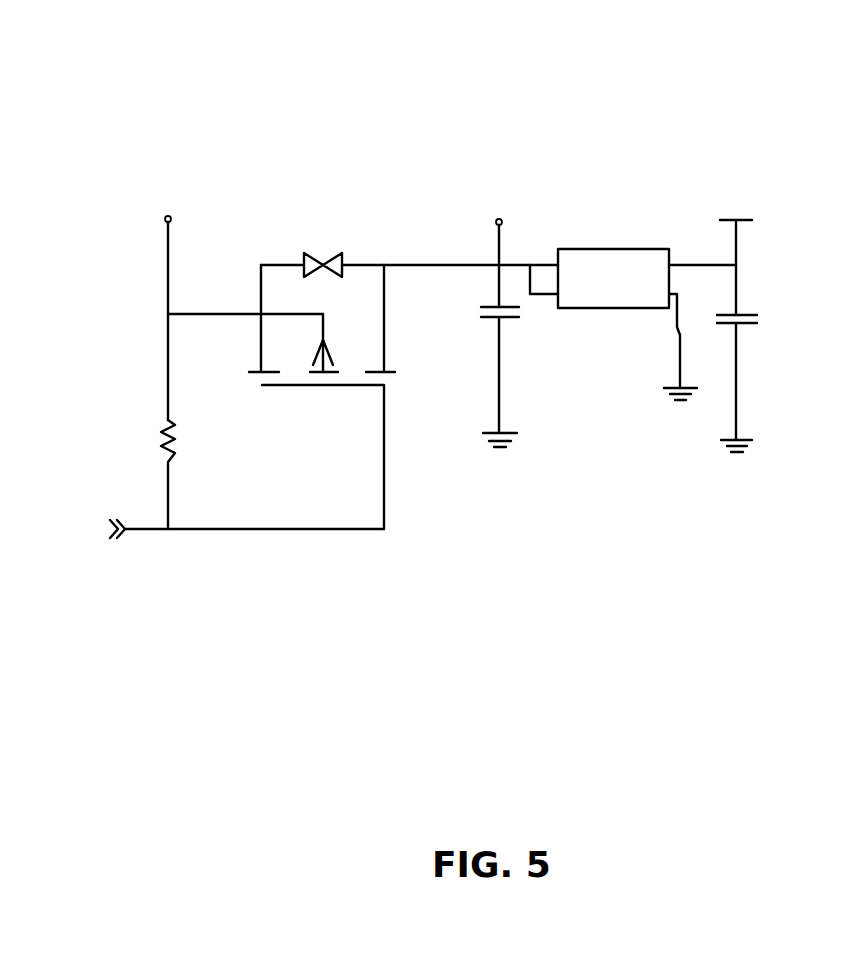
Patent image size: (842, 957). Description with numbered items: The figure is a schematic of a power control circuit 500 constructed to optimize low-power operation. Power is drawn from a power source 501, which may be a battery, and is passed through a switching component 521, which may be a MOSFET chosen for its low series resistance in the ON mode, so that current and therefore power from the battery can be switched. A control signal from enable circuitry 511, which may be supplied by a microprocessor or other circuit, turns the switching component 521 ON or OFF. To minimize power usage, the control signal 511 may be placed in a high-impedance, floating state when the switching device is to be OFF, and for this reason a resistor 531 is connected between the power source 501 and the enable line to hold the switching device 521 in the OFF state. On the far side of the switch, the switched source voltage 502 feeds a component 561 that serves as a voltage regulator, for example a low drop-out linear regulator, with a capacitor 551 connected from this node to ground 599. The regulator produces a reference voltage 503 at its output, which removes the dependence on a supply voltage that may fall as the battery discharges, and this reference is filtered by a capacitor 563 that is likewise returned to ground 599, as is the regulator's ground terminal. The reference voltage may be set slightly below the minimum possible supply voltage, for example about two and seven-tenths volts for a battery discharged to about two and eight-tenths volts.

The power control circuit 500 is at (558, 61).
The power source 501 is at (166, 217).
The source voltage 502 is at (497, 220).
The reference voltage 503 is at (733, 220).
The enable circuitry 511 is at (112, 527).
The switching component 521 is at (272, 385).
The resistor 531 is at (168, 432).
The capacitor 551 is at (498, 319).
The component 561 is at (613, 250).
The capacitor 563 is at (737, 312).
The ground 599 is at (499, 432).